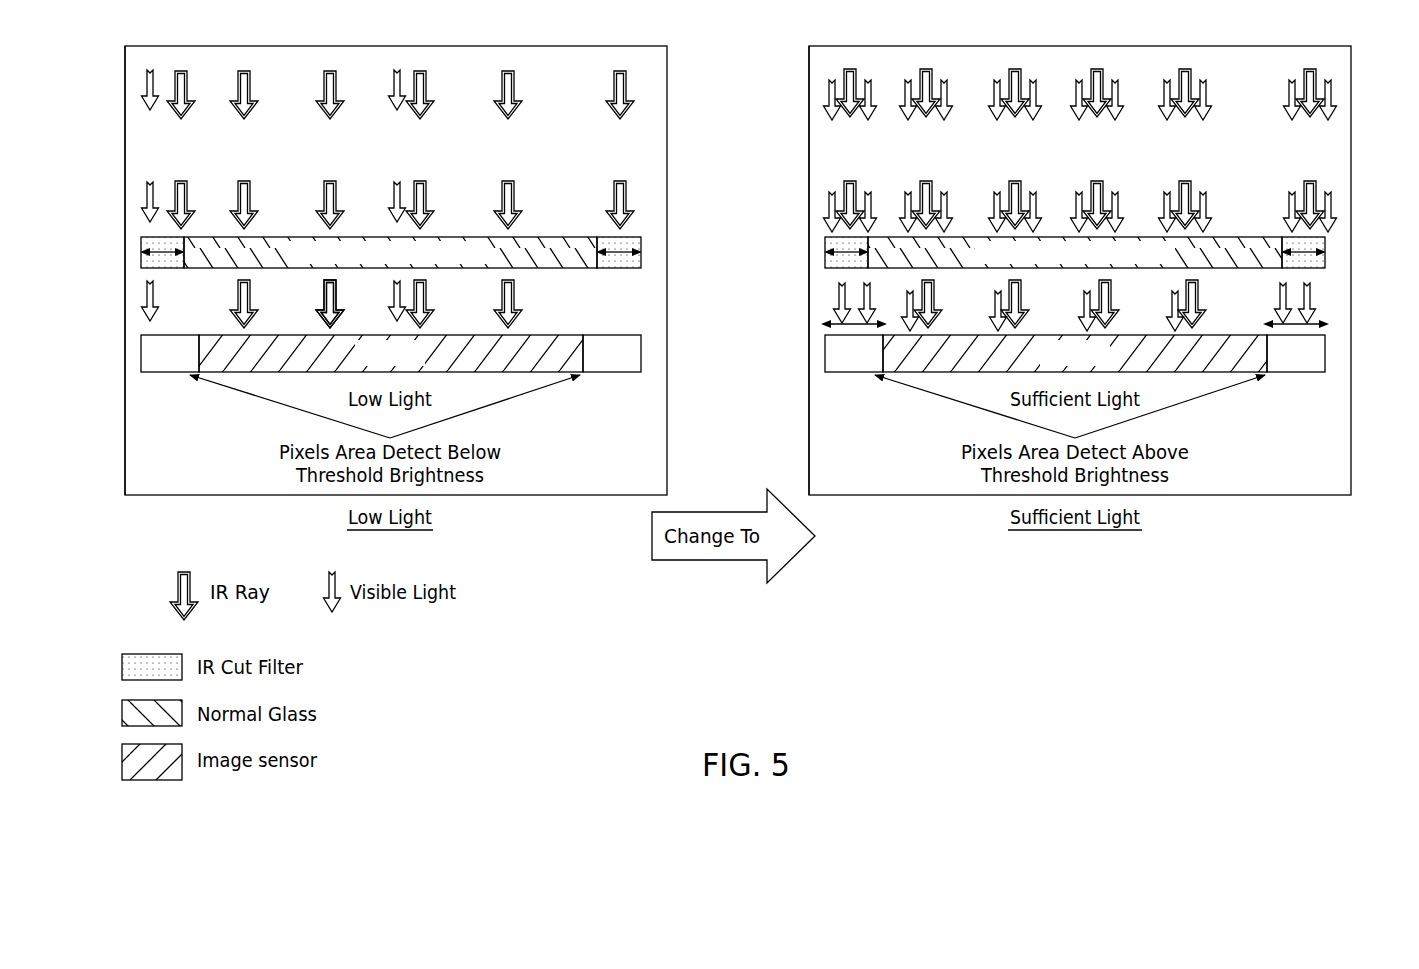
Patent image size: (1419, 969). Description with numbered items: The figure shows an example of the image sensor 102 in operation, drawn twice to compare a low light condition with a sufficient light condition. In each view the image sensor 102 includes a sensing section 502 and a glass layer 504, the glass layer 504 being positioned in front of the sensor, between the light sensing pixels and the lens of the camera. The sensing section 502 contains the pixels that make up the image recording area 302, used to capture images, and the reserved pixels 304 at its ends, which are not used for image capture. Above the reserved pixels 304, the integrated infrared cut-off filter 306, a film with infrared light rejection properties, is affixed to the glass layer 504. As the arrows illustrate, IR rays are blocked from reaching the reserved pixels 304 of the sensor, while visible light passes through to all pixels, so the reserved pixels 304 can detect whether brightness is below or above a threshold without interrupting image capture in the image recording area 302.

The image sensor 102 is at (123, 323).
The image recording area 302 is at (387, 334).
The reserved pixels 304 is at (189, 404).
The integrated infrared cut-off filter 306 is at (139, 242).
The sensing section 502 is at (652, 355).
The glass layer 504 is at (652, 262).